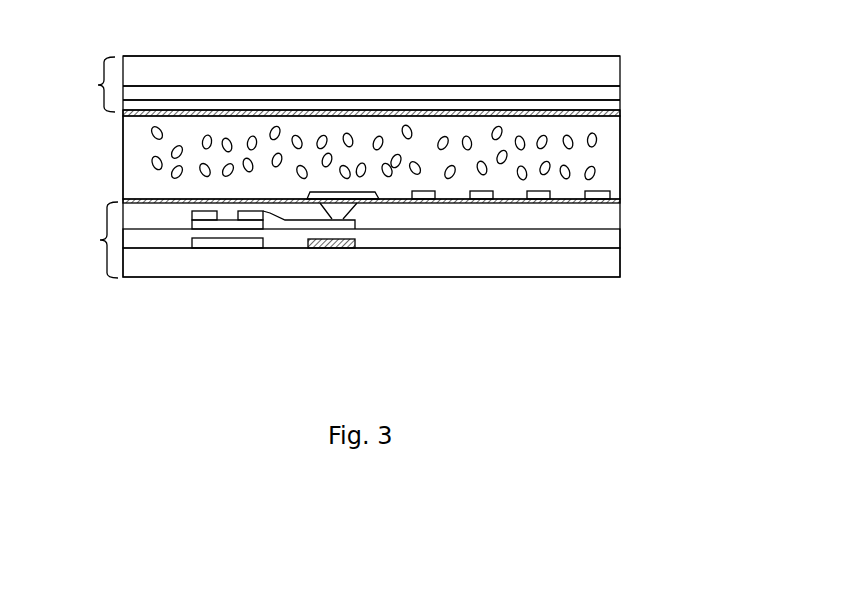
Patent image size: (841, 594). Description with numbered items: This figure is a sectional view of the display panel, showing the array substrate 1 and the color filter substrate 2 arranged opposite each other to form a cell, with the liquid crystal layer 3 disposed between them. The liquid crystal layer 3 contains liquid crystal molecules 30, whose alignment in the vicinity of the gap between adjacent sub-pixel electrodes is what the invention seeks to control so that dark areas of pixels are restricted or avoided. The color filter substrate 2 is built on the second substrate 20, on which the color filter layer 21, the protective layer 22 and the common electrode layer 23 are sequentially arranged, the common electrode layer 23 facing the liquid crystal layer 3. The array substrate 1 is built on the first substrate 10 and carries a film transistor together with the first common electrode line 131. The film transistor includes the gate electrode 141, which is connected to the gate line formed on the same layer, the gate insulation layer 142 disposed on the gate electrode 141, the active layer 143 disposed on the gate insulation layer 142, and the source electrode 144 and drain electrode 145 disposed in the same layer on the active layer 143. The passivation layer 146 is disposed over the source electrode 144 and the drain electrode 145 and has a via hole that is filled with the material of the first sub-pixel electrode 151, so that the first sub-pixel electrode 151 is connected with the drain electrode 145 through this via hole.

The array substrate 1 is at (100, 240).
The color filter substrate 2 is at (98, 86).
The liquid crystal layer 3 is at (612, 145).
The first substrate 10 is at (575, 263).
The second substrate 20 is at (620, 56).
The color filter layer 21 is at (603, 87).
The protective layer 22 is at (603, 100).
The common electrode layer 23 is at (620, 116).
The liquid crystal molecule 30 is at (150, 132).
The first common electrode line 131 is at (355, 242).
The gate electrode 141 is at (222, 238).
The gate insulation layer 142 is at (592, 238).
The active layer 143 is at (232, 223).
The source electrode 144 is at (200, 212).
The drain electrode 145 is at (270, 214).
The passivation layer 146 is at (592, 209).
The first sub-pixel electrode 151 is at (607, 190).